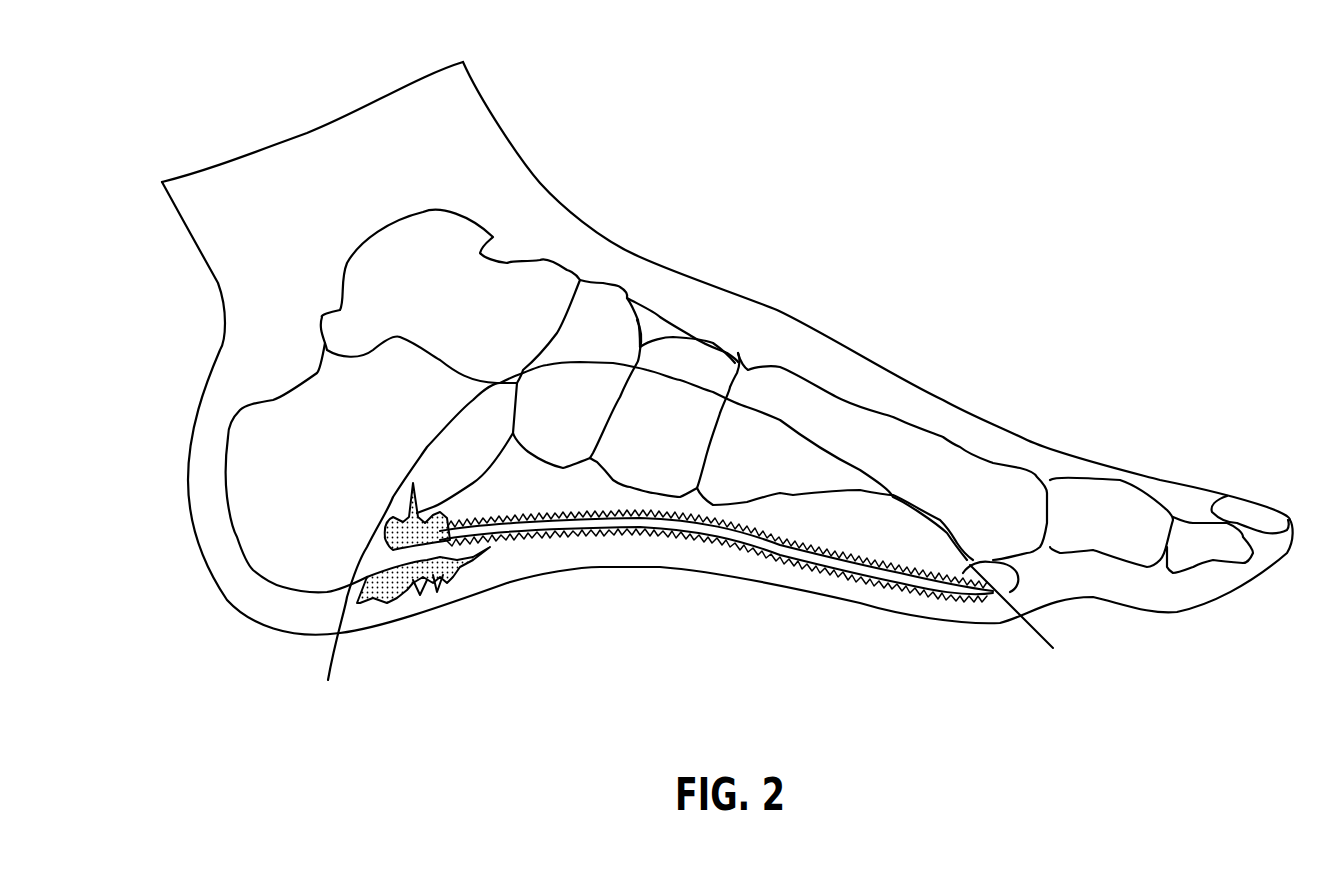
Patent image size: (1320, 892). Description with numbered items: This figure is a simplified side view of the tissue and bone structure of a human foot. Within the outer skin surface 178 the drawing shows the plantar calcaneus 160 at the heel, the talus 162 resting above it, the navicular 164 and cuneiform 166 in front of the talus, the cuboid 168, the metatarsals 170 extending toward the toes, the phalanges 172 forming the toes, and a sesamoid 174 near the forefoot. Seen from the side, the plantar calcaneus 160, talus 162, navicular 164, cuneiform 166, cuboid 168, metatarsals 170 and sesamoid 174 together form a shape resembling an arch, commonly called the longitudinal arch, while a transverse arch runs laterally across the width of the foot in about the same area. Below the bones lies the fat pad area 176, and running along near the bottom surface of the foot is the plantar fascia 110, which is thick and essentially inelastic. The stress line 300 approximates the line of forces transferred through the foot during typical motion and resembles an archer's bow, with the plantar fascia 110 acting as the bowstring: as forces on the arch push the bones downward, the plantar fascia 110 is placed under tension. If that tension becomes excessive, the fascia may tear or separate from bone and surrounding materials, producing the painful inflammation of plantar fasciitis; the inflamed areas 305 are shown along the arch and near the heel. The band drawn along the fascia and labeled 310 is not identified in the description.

The plantar fascia 110 is at (997, 587).
The plantar calcaneus 160 is at (240, 517).
The talus 162 is at (480, 252).
The navicular 164 is at (600, 308).
The cuneiform 166 is at (660, 325).
The cuboid 168 is at (717, 363).
The metatarsals 170 is at (910, 450).
The phalanges 172 is at (1187, 527).
The sesamoid 174 is at (980, 580).
The fat pad area 176 is at (607, 552).
The outer skin surface 178 is at (692, 573).
The stress line 300 is at (328, 667).
The inflamed areas 305 is at (433, 575).
The fascia support band 310 is at (753, 548).